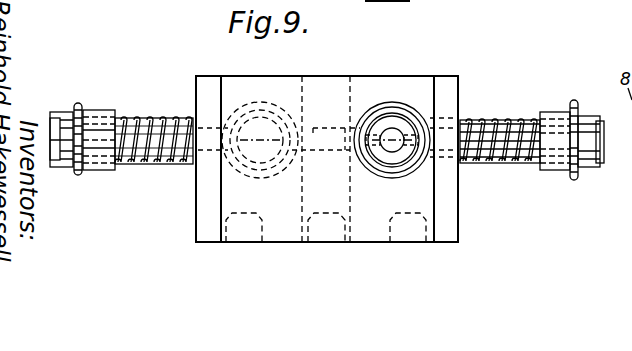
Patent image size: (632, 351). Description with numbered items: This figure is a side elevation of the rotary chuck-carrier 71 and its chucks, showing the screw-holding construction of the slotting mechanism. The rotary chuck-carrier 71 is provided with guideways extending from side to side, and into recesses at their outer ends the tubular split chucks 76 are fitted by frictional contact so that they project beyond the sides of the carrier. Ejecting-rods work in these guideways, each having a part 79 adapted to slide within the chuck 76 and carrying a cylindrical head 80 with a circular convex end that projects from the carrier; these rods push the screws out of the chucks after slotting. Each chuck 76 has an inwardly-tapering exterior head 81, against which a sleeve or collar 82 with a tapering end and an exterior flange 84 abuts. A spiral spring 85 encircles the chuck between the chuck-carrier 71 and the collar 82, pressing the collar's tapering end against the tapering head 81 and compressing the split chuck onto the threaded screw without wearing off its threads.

The rotary chuck-carrier 71 is at (327, 150).
The tubular split chuck 76 is at (388, 170).
The sliding part of ejecting-rod 79 is at (397, 133).
The cylindrical head 80 is at (262, 150).
The inwardly-tapering exterior head 81 is at (57, 112).
The sleeve or collar 82 is at (105, 168).
The exterior flange 84 is at (80, 103).
The spiral spring 85 is at (163, 117).